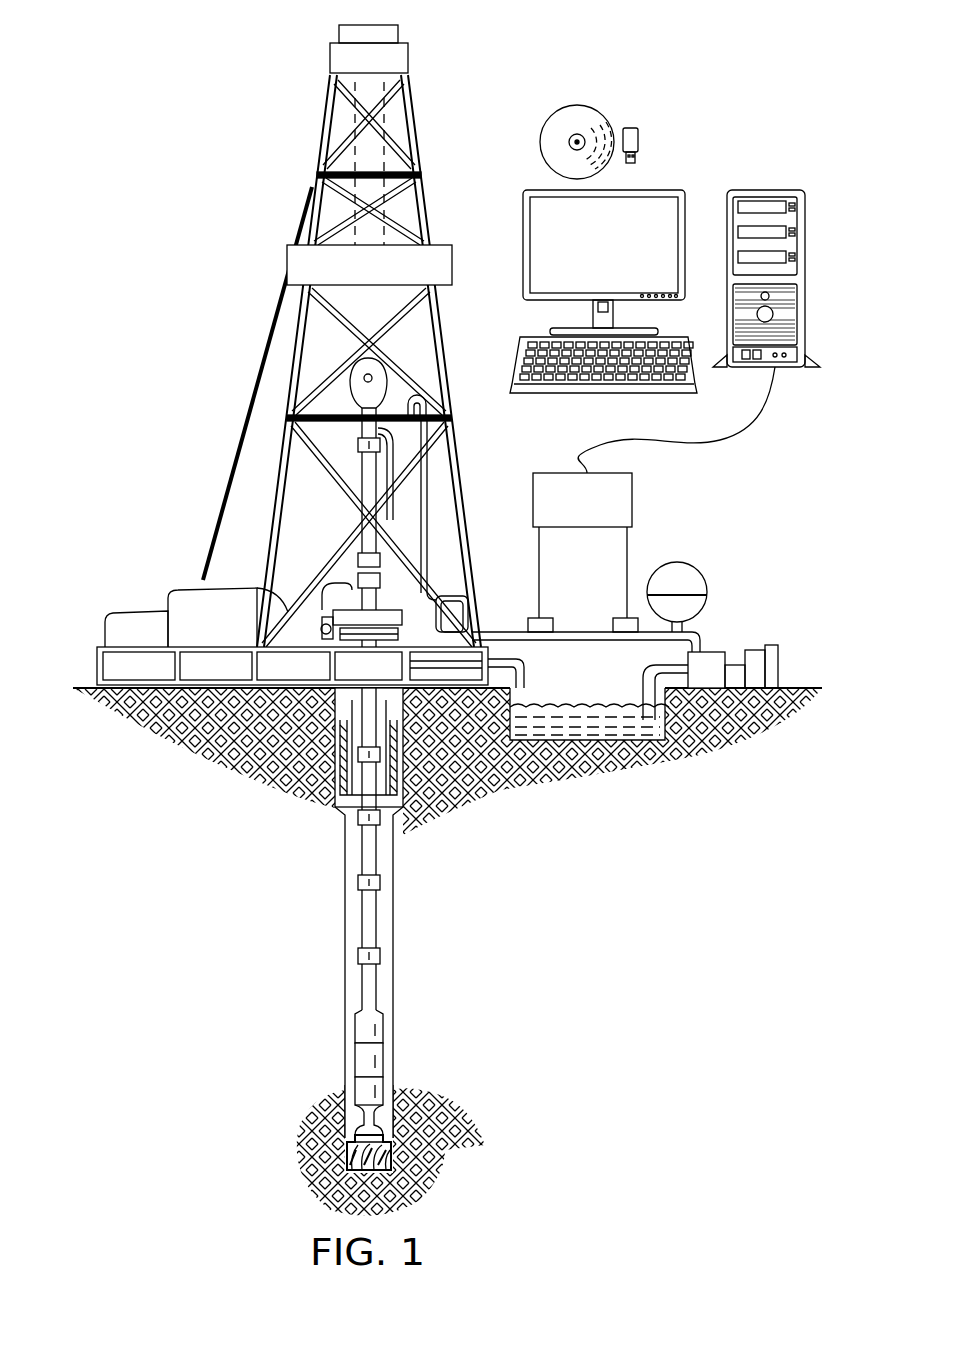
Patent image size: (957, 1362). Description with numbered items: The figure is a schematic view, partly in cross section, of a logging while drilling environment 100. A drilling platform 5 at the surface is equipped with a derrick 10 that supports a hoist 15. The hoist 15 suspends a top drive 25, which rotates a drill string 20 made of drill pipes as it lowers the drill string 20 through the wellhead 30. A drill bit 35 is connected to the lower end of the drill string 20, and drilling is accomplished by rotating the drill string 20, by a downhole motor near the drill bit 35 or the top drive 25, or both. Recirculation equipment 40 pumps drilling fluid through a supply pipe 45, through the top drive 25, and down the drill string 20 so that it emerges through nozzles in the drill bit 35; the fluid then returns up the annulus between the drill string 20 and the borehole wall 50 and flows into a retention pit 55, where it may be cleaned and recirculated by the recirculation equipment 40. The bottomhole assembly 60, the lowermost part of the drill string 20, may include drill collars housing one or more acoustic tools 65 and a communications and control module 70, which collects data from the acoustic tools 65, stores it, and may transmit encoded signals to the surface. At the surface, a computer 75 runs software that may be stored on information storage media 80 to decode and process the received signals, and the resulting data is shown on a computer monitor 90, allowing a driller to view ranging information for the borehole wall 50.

The logging while drilling environment 100 is at (203, 80).
The derrick 10 is at (418, 157).
The hoist 15 is at (348, 392).
The top drive 25 is at (367, 480).
The wellhead 30 is at (340, 612).
The drilling platform 5 is at (97, 667).
The drill string 20 is at (372, 850).
The borehole wall 50 is at (393, 870).
The bottomhole assembly 60 is at (473, 1022).
The communications and control module 70 is at (360, 1030).
The acoustic tool 65 is at (360, 1062).
The drill bit 35 is at (392, 1143).
The supply pipe 45 is at (582, 632).
The retention pit 55 is at (590, 707).
The recirculation equipment 40 is at (755, 650).
The computer 75 is at (805, 278).
The information storage media 80 is at (657, 100).
The computer monitor 90 is at (618, 262).